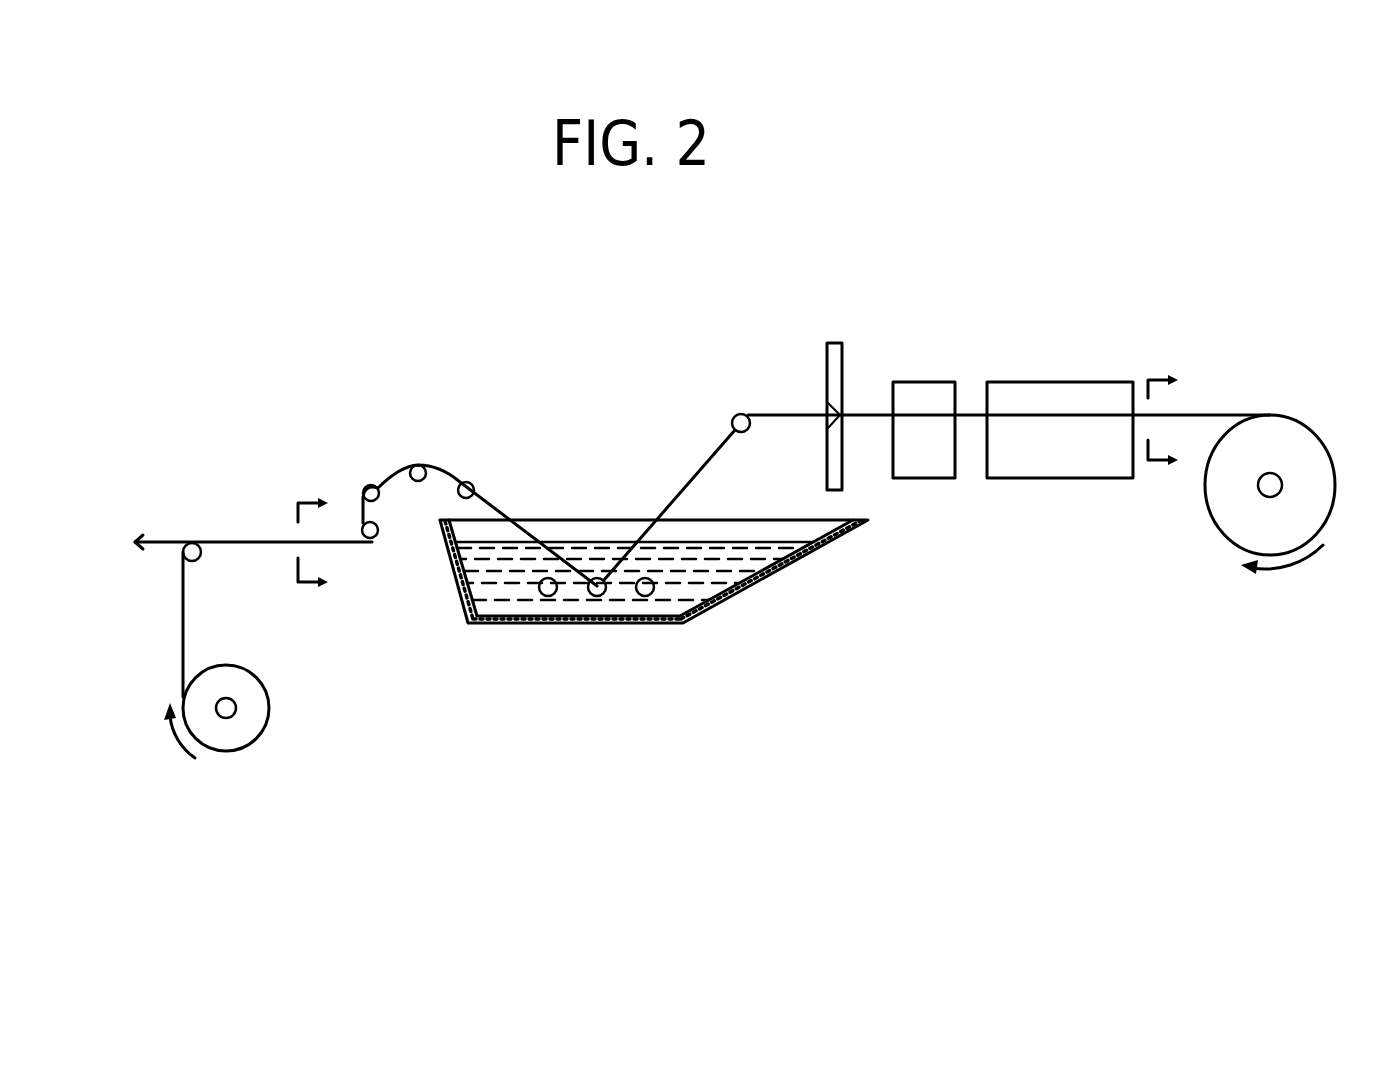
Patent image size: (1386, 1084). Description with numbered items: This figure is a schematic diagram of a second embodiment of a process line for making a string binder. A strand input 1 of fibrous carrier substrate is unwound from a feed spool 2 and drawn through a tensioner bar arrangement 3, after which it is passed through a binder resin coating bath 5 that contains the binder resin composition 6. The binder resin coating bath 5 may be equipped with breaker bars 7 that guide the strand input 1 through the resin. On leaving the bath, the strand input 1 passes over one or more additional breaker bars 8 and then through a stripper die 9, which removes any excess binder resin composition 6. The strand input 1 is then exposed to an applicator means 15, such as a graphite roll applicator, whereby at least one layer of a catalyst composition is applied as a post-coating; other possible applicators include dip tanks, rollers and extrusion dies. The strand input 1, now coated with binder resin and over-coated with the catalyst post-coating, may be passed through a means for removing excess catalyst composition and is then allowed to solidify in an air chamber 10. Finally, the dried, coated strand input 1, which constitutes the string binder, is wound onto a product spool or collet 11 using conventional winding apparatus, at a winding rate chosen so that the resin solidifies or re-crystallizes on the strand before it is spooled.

The strand input 1 is at (242, 542).
The feed spool 2 is at (252, 717).
The tensioner bar arrangement 3 is at (363, 490).
The binder resin coating bath 5 is at (787, 565).
The binder resin composition 6 is at (700, 575).
The breaker bars 7 is at (597, 596).
The additional breaker bars 8 is at (733, 417).
The stripper die 9 is at (834, 343).
The air chamber 10 is at (1030, 382).
The product spool or collet 11 is at (1210, 515).
The applicator means 15 is at (922, 382).